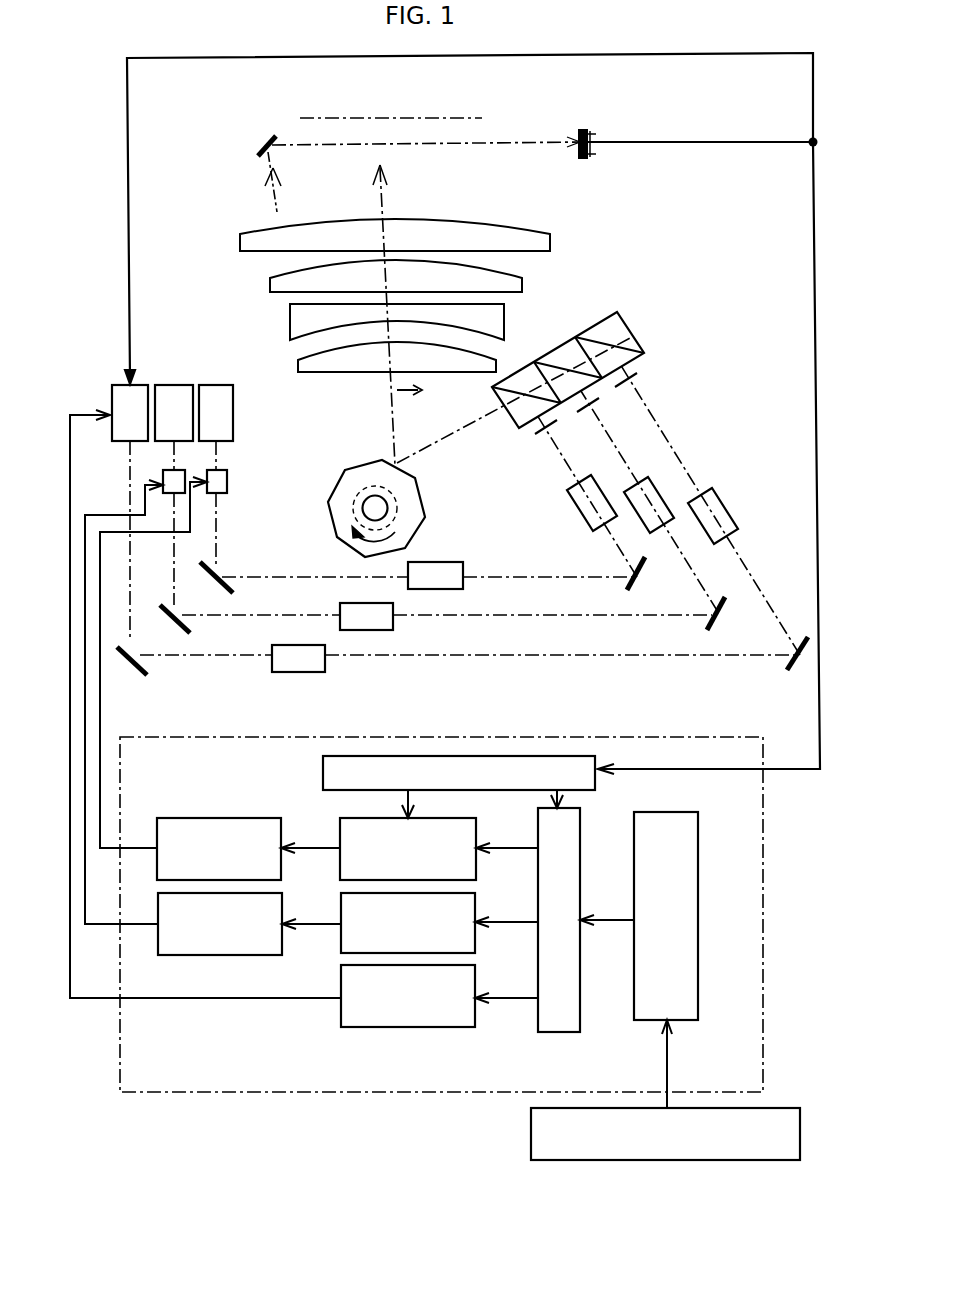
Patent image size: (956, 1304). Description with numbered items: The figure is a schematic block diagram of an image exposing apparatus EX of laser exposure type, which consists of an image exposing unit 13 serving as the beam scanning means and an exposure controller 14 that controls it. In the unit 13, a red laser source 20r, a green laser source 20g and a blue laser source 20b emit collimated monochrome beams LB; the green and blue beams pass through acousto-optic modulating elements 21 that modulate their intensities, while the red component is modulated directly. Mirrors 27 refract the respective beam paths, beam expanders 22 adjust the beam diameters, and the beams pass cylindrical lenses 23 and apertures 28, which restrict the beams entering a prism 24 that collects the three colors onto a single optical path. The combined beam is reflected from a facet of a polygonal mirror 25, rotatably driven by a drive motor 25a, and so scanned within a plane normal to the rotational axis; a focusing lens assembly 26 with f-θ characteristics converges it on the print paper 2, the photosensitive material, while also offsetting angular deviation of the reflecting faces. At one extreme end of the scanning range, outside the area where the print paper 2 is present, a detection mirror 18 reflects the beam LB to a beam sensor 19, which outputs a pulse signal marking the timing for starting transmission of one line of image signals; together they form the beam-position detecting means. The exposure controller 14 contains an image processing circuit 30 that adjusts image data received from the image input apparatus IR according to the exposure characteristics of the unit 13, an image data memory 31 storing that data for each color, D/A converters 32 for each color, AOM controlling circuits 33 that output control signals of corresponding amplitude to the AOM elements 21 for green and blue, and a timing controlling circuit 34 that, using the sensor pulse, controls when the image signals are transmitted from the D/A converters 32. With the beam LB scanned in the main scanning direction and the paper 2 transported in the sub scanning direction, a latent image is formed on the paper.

The print paper 2 is at (418, 118).
The image exposing unit 13 is at (110, 250).
The exposure controller 14 is at (200, 1098).
The detection mirror 18 is at (262, 146).
The beam sensor 19 is at (582, 128).
The red laser source 20r is at (112, 432).
The green laser source 20g is at (172, 385).
The blue laser source 20b is at (233, 388).
The acousto-optic modulating elements 21 is at (185, 470).
The beam expanders 22 is at (436, 592).
The cylindrical lenses 23 is at (600, 477).
The prism 24 is at (637, 323).
The polygonal mirror 25 is at (328, 525).
The drive motor 25a is at (354, 508).
The focusing lens assembly 26 is at (312, 386).
The mirrors 27 is at (215, 600).
The apertures 28 is at (558, 430).
The image processing circuit 30 is at (634, 997).
The image data memory 31 is at (560, 1035).
The D/A converters 32 is at (478, 840).
The AOM controlling circuits 33 is at (284, 866).
The timing controlling circuit 34 is at (322, 773).
The laser beam LB is at (270, 163).
The image exposing apparatus EX is at (792, 790).
The image input apparatus IR is at (531, 1138).